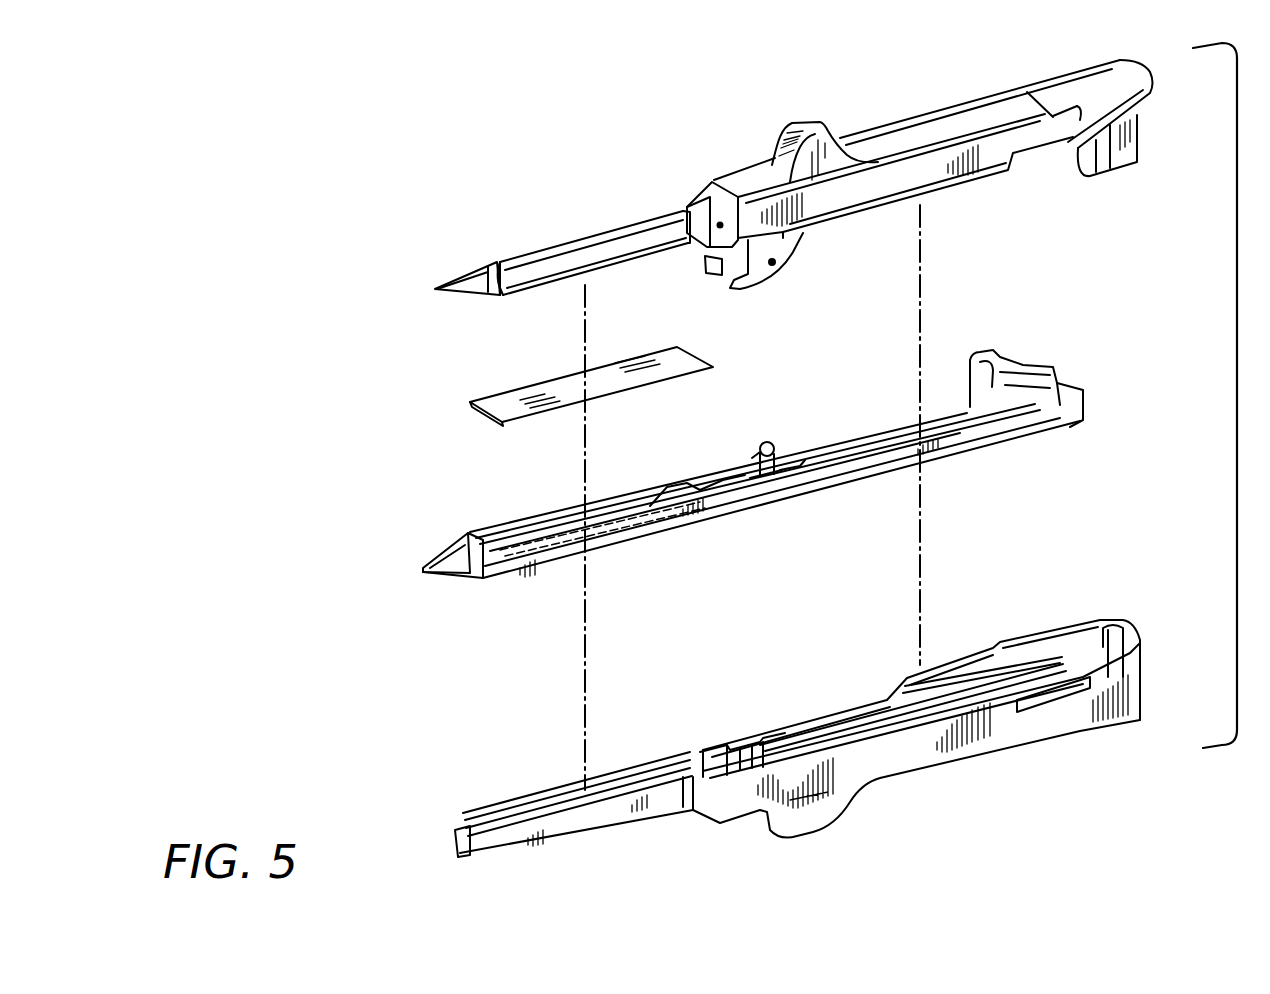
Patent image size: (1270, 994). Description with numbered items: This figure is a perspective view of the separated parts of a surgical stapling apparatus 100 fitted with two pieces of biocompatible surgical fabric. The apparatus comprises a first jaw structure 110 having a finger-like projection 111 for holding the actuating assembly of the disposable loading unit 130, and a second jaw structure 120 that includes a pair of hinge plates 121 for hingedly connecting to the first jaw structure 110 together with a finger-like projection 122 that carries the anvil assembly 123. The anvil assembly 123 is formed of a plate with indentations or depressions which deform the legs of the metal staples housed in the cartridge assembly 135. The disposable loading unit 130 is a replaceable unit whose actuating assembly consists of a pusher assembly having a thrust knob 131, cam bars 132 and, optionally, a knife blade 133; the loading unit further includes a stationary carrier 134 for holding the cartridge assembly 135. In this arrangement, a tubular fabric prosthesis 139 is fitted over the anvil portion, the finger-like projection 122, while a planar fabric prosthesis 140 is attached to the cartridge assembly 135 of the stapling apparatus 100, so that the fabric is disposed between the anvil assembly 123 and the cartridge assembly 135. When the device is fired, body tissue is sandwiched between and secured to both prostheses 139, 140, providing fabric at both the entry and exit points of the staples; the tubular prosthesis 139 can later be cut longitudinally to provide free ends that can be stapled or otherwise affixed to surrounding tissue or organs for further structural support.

The surgical stapling apparatus 100 is at (756, 849).
The first jaw structure 110 is at (1162, 704).
The finger-like projection 111 is at (528, 802).
The second jaw structure 120 is at (1160, 120).
The hinge plates 121 is at (787, 270).
The finger-like projection 122 is at (495, 265).
The anvil assembly 123 is at (497, 294).
The disposable loading unit 130 is at (1098, 412).
The thrust knob 131 is at (990, 352).
The cam bars 132 is at (733, 500).
The knife blade 133 is at (751, 456).
The stationary carrier 134 is at (617, 537).
The cartridge assembly 135 is at (518, 527).
The tubular fabric prosthesis 139 is at (598, 243).
The planar fabric prosthesis 140 is at (550, 388).